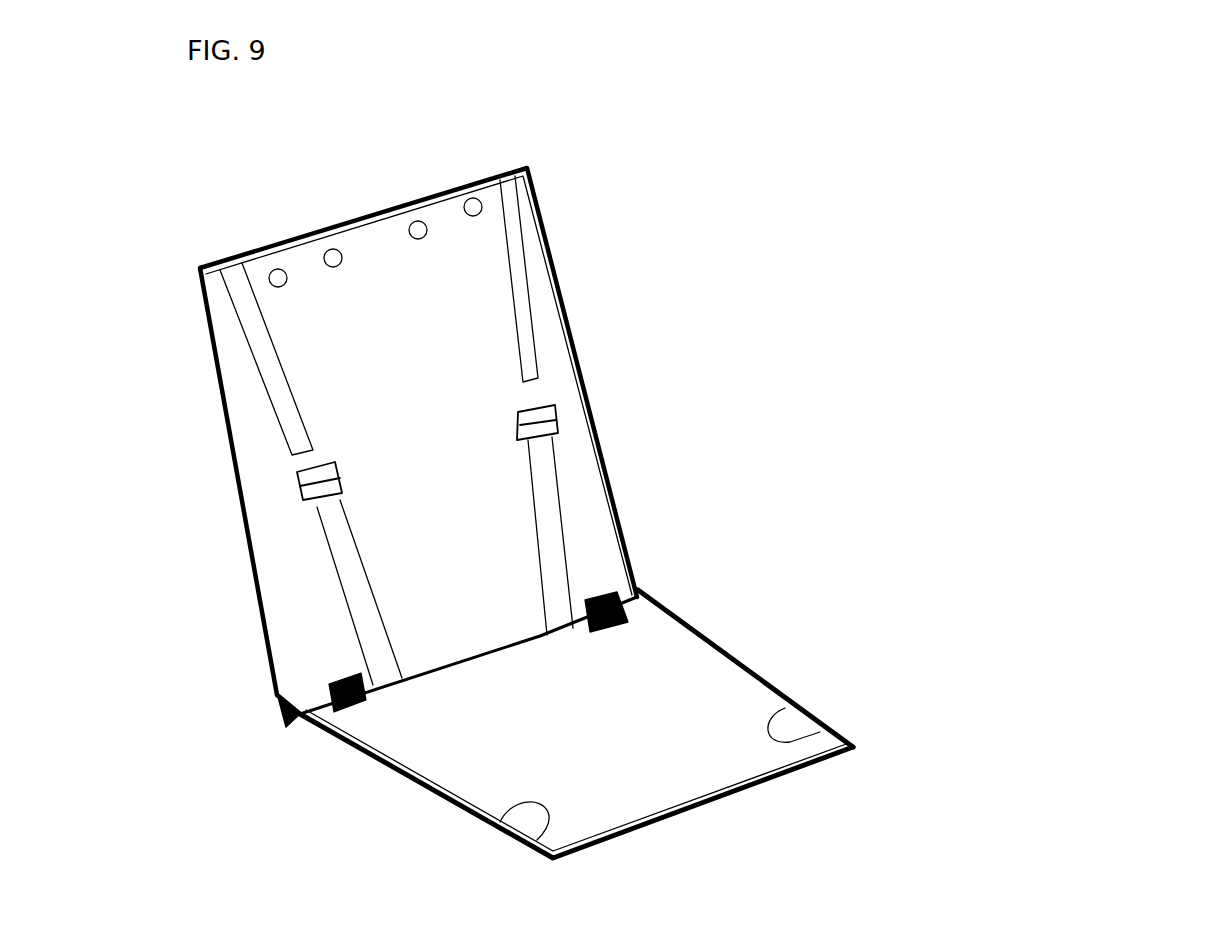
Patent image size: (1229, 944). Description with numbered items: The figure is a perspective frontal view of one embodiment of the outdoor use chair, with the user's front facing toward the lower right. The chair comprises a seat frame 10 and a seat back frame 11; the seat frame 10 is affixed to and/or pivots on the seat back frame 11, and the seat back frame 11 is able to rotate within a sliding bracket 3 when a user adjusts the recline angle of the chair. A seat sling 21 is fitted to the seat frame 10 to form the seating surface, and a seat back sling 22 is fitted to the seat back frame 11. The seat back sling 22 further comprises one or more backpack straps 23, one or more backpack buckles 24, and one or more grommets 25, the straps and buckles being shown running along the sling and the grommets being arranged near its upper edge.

The sliding bracket 3 is at (645, 598).
The seat frame 10 is at (707, 632).
The seat back frame 11 is at (577, 355).
The seat sling 21 is at (620, 705).
The seat back sling 22 is at (450, 488).
The backpack straps 23 is at (523, 298).
The backpack buckles 24 is at (517, 417).
The grommets 25 is at (475, 207).